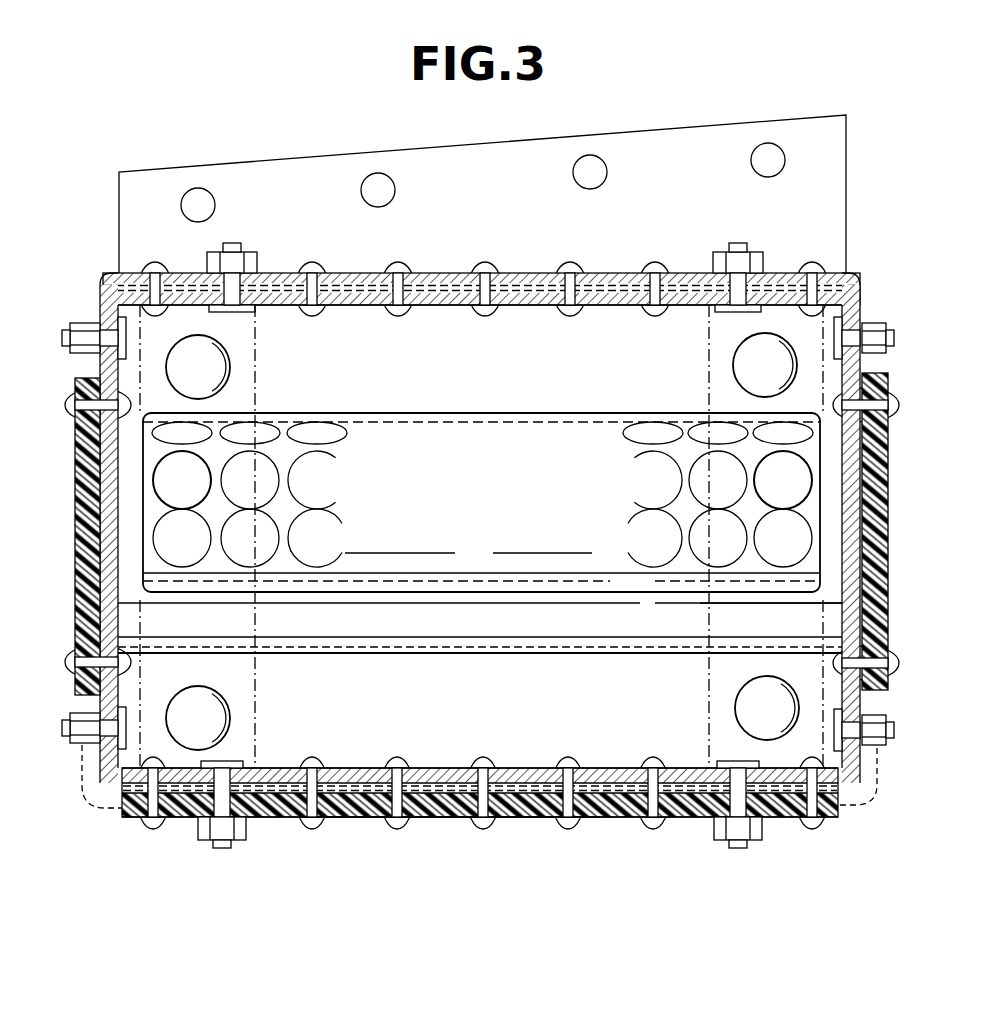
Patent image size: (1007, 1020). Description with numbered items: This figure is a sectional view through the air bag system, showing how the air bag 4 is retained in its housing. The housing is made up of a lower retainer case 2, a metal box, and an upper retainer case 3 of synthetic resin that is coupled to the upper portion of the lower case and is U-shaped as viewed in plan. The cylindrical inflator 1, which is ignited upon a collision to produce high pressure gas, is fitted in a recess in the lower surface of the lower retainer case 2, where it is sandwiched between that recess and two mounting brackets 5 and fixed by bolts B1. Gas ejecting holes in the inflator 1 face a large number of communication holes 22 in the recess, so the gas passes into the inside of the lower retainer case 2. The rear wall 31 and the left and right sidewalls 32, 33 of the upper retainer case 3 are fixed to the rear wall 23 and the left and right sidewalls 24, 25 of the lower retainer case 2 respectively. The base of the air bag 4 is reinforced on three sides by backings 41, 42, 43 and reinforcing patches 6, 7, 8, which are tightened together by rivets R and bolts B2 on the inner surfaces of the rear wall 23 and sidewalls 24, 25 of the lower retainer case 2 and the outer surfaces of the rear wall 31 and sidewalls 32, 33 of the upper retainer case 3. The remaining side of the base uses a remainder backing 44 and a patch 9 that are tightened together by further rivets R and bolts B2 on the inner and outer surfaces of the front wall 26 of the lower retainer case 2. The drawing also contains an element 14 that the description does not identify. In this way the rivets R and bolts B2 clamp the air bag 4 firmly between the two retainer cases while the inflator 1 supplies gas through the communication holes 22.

The inflator 1 is at (458, 416).
The lower retainer case 2 is at (518, 770).
The upper retainer case 3 is at (520, 805).
The air bag 4 is at (368, 776).
The mounting bracket 5 is at (245, 384).
The reinforcing patch 6 is at (462, 812).
The reinforcing patch 7 is at (75, 446).
The reinforcing patch 8 is at (890, 506).
The patch 9 is at (342, 271).
The mounting plate 14 is at (445, 170).
The communication hole 22 is at (318, 430).
The rear wall 23 is at (478, 775).
The left sidewall 24 is at (128, 616).
The right sidewall 25 is at (823, 612).
The front wall 26 is at (516, 272).
The rear wall 31 is at (338, 800).
The left sidewall 32 is at (150, 480).
The right sidewall 33 is at (890, 444).
The backing 41 is at (603, 768).
The backing 42 is at (182, 480).
The backing 43 is at (783, 480).
The remainder backing 44 is at (444, 306).
The bolt B1 is at (222, 364).
The bolt B2 is at (233, 250).
The rivet R is at (396, 266).